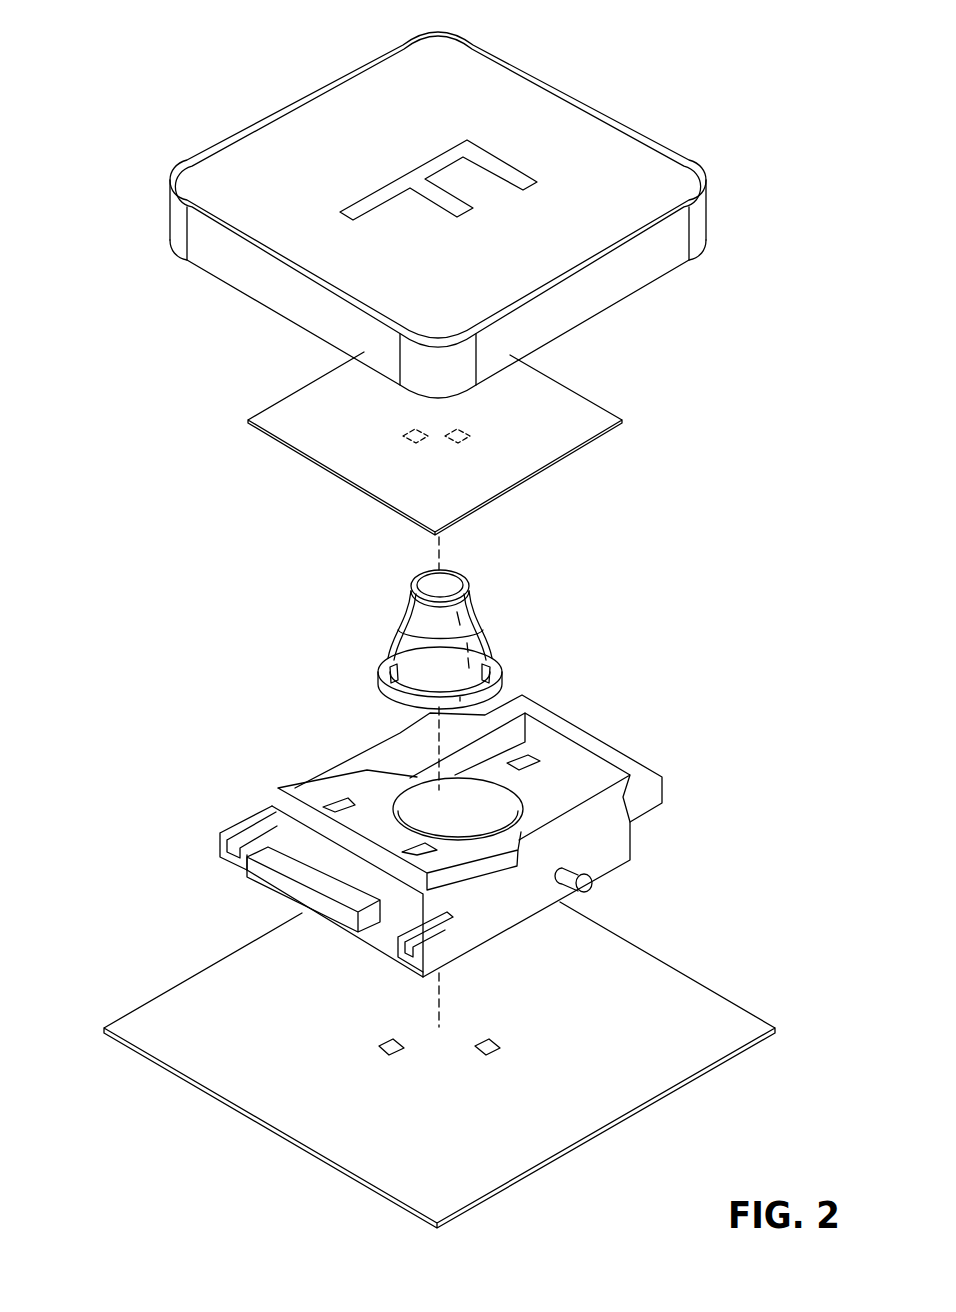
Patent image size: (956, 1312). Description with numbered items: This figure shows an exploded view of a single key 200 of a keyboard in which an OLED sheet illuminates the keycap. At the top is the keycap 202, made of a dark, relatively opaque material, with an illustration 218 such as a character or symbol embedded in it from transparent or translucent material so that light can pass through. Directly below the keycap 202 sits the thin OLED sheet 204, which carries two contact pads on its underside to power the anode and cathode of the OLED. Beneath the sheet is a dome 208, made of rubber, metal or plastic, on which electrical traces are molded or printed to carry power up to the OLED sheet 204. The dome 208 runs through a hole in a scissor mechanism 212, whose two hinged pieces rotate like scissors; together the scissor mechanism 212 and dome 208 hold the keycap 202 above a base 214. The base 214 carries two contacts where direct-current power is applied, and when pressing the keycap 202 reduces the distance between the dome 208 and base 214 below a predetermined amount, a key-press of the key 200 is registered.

The key 200 is at (116, 25).
The keycap 202 is at (710, 256).
The OLED sheet 204 is at (622, 420).
The dome 208 is at (563, 668).
The scissor mechanism 212 is at (632, 758).
The base 214 is at (671, 962).
The illustration 218 is at (497, 153).